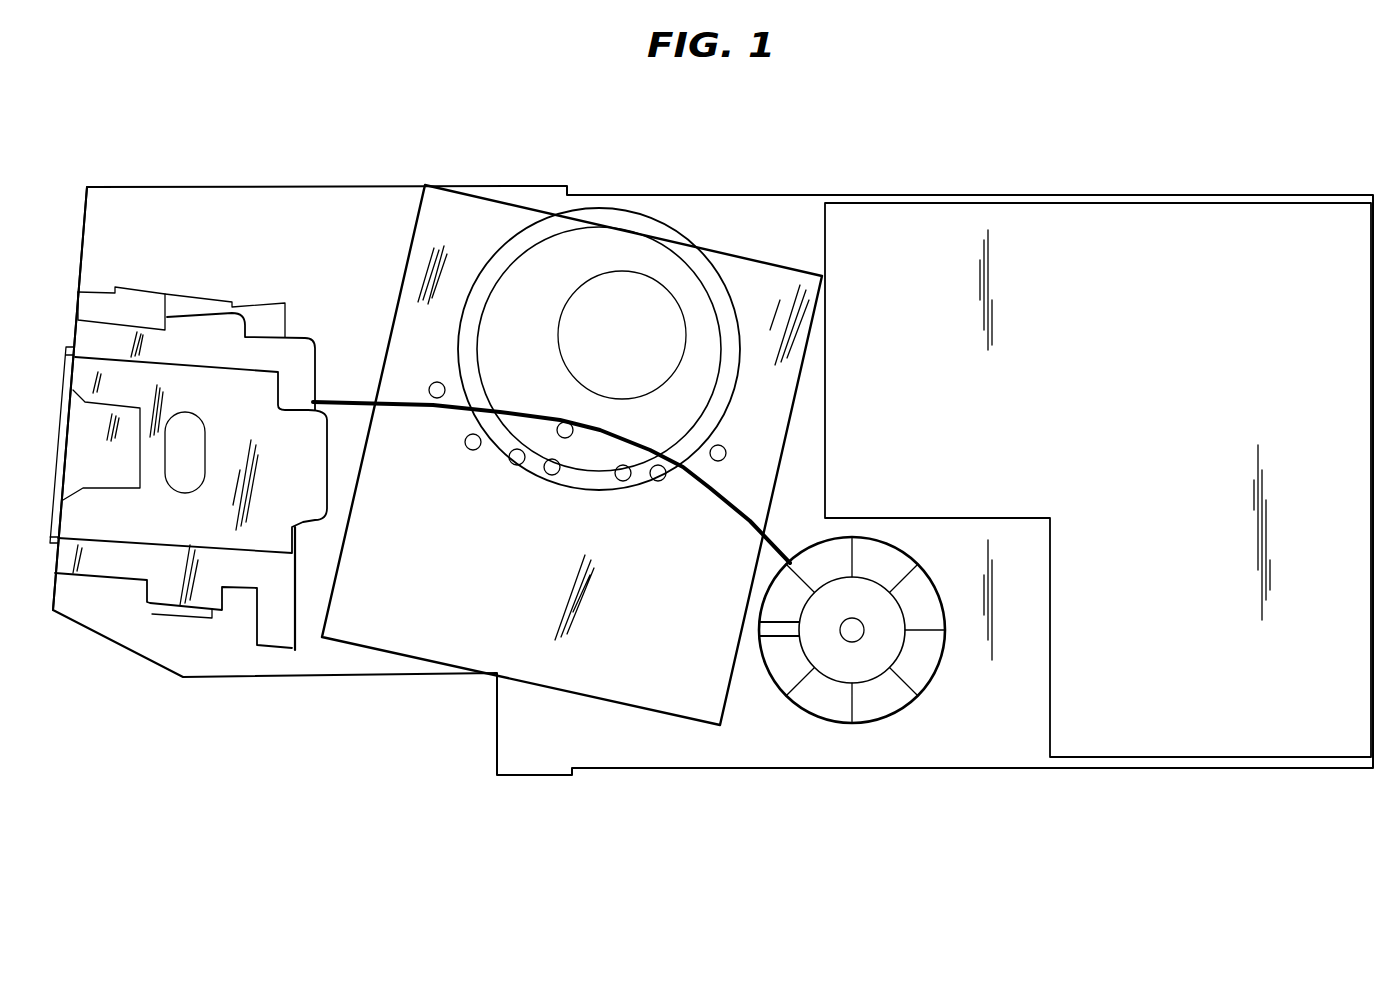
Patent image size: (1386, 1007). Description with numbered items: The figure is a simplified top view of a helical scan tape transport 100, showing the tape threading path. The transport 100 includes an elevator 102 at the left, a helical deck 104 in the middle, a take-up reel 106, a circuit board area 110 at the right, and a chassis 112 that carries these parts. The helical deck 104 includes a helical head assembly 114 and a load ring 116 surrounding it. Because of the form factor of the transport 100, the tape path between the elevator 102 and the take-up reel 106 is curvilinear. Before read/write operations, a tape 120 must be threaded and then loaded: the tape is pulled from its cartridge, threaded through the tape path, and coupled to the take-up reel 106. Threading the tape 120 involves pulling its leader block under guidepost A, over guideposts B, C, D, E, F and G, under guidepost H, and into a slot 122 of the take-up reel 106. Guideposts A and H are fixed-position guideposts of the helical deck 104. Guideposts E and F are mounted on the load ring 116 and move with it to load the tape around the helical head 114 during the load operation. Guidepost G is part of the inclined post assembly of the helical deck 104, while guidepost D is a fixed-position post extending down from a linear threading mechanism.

The transport 100 is at (229, 150).
The elevator 102 is at (254, 420).
The helical deck 104 is at (456, 598).
The take-up reel 106 is at (877, 553).
The circuit board area 110 is at (1163, 363).
The chassis 112 is at (284, 253).
The helical head assembly 114 is at (645, 347).
The load ring 116 is at (670, 243).
The tape 120 is at (727, 508).
The slot 122 is at (788, 629).
The guidepost A is at (437, 399).
The guidepost B is at (473, 451).
The guidepost C is at (517, 466).
The guidepost D is at (565, 422).
The guidepost E is at (552, 476).
The guidepost F is at (623, 482).
The guidepost G is at (664, 480).
The guidepost H is at (725, 447).